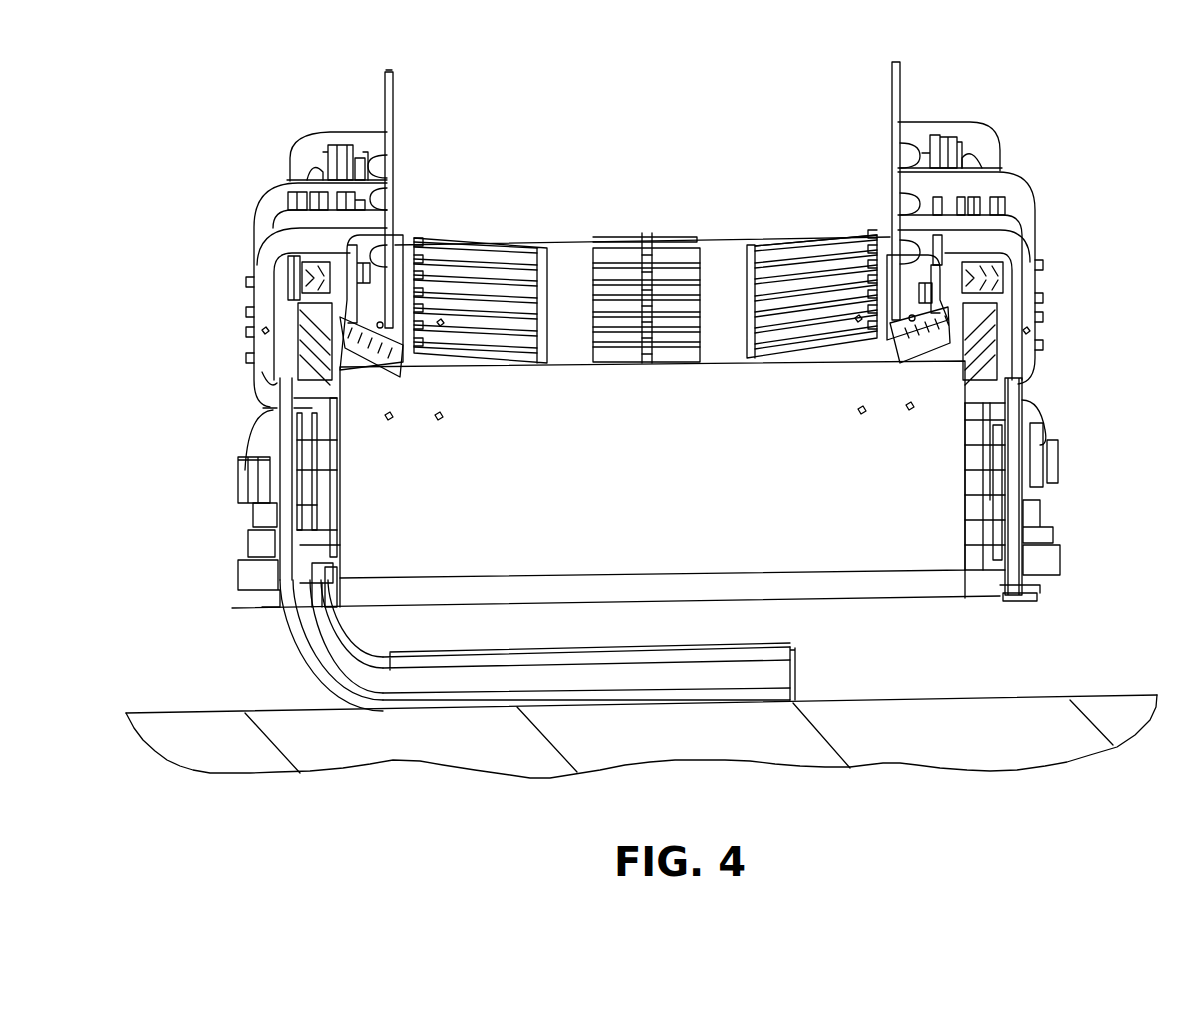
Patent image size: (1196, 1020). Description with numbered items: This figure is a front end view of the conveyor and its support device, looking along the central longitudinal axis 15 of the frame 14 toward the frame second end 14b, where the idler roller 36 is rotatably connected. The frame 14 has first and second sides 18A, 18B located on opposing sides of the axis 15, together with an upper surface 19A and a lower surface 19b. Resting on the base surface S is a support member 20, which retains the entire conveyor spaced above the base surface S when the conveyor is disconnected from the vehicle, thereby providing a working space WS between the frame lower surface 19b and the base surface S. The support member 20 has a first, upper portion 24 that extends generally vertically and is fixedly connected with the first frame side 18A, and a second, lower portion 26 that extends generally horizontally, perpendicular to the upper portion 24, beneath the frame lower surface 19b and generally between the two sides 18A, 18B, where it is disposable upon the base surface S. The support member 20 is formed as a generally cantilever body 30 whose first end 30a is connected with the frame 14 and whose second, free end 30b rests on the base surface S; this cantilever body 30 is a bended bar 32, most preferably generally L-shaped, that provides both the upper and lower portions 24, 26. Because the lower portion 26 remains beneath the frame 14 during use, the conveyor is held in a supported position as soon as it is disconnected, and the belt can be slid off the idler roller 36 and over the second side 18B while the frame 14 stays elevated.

The frame 14 is at (203, 267).
The second end of frame 14b is at (1015, 457).
The central longitudinal axis 15 is at (673, 460).
The first side of frame 18A is at (278, 387).
The second side of frame 18B is at (1020, 420).
The upper surface of frame 19A is at (1013, 185).
The lower surface of frame 19b is at (1015, 596).
The support member 20 is at (304, 708).
The first upper portion of support member 24 is at (268, 611).
The second lower portion of support member 26 is at (466, 722).
The cantilever body 30 is at (635, 613).
The first end of cantilever body 30a is at (300, 525).
The second free end of cantilever body 30b is at (798, 662).
The bended bar 32 is at (640, 674).
The idler roller 36 is at (570, 398).
The base surface S is at (1120, 697).
The working space WS is at (910, 613).